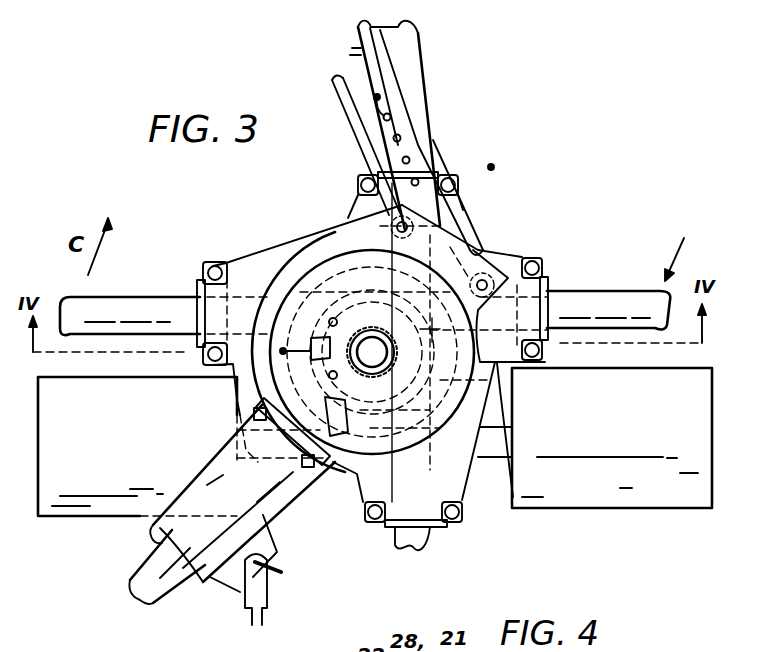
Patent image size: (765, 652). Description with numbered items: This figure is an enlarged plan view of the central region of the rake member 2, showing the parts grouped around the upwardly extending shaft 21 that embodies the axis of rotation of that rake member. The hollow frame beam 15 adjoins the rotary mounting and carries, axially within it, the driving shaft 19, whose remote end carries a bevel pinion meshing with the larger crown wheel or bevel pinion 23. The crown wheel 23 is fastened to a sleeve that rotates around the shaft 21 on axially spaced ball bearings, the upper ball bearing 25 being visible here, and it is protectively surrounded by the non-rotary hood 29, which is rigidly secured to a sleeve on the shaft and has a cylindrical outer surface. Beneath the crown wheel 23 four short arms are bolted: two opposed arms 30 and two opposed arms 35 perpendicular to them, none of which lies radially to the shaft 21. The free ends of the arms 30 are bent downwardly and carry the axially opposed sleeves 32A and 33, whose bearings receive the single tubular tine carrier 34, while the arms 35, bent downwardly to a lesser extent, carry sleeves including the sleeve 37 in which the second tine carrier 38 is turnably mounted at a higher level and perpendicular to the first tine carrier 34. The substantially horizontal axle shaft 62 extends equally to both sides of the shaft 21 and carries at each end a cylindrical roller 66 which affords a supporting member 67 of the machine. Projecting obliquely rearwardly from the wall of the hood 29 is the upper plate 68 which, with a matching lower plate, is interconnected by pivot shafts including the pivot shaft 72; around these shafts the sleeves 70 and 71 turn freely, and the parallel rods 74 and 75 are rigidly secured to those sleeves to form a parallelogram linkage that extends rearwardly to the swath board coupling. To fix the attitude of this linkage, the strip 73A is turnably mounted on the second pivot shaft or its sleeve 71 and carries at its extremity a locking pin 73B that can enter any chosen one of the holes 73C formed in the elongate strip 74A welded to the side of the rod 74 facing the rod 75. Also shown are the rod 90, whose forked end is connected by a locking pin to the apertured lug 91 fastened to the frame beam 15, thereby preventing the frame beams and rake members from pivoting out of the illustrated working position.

The rake member 2 is at (670, 254).
The hollow frame beam 15 is at (213, 462).
The driving shaft 19 is at (128, 582).
The upwardly extending shaft 21 is at (373, 328).
The crown wheel or bevel pinion 23 is at (458, 236).
The upper ball bearing 25 is at (367, 490).
The hood 29 is at (336, 254).
The arm 30 is at (250, 262).
The sleeve 32A is at (546, 334).
The sleeve 33 is at (199, 267).
The tine carrier 34 is at (118, 306).
The arm 35 is at (445, 216).
The sleeve 37 is at (425, 527).
The second tine carrier 38 is at (412, 47).
The axle shaft 62 is at (487, 447).
The cylindrical roller 66 is at (143, 501).
The supporting member 67 is at (69, 500).
The upper plate 68 is at (445, 240).
The sleeve 70 is at (527, 252).
The sleeve 71 is at (344, 212).
The pivot shaft 72 is at (497, 266).
The rod or strip 73A is at (380, 148).
The locking pin 73B is at (357, 51).
The holes 73C is at (384, 119).
The rod 74 is at (405, 112).
The elongate strip 74A is at (422, 163).
The rod 75 is at (334, 81).
The rod 90 is at (253, 627).
The apertured lug 91 is at (258, 538).